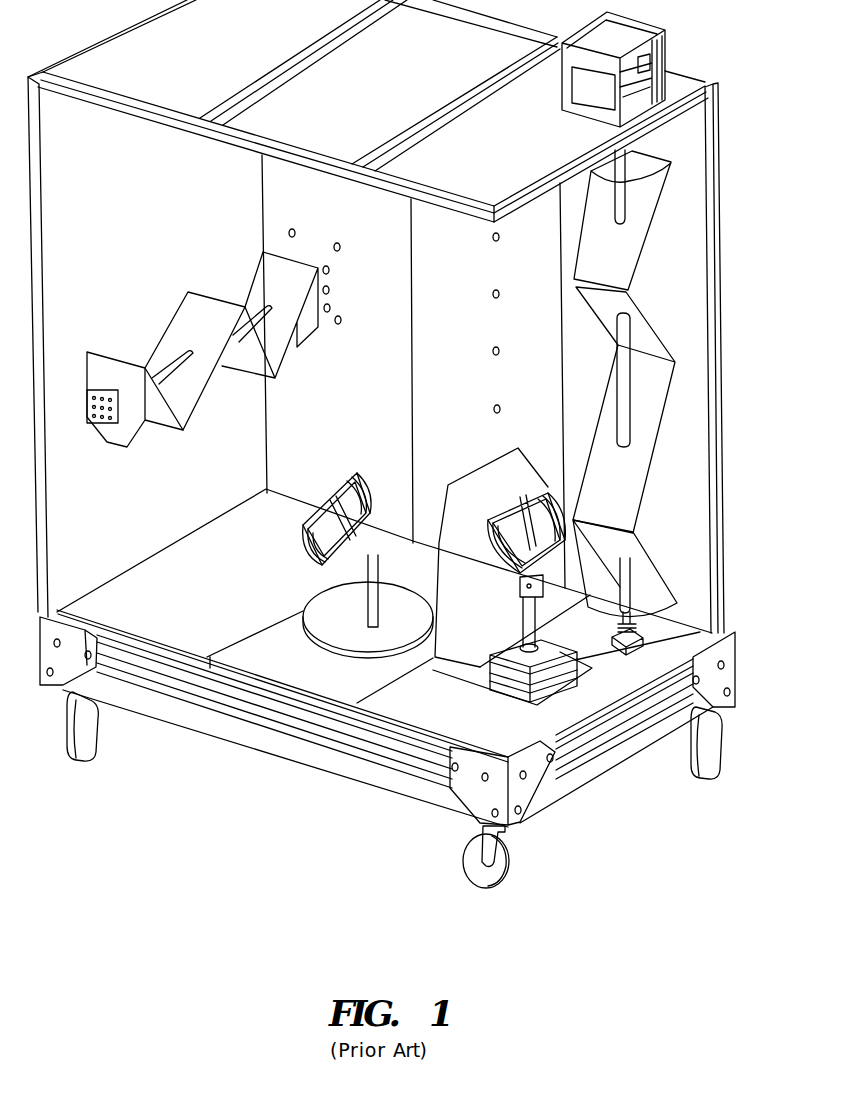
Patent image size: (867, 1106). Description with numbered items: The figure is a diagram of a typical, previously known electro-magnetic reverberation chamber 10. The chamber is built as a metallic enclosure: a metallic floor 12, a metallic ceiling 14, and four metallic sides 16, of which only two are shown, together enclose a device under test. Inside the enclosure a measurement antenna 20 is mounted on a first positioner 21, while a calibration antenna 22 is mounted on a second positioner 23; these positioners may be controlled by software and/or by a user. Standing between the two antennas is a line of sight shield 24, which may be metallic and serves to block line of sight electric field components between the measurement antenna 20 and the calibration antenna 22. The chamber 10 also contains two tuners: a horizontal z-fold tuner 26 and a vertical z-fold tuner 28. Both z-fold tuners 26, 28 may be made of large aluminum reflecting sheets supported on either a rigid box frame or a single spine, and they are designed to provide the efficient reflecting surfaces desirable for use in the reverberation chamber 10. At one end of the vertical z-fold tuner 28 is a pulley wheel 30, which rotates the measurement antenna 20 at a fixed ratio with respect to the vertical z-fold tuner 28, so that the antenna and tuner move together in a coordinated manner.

The electro-magnetic reverberation chamber 10 is at (207, 788).
The metallic floor 12 is at (228, 603).
The metallic ceiling 14 is at (336, 184).
The metallic sides 16 is at (382, 401).
The measurement antenna 20 is at (546, 490).
The first positioner 21 is at (486, 667).
The calibration antenna 22 is at (370, 480).
The second positioner 23 is at (326, 613).
The line of sight shield 24 is at (487, 457).
The horizontal z-fold tuner 26 is at (310, 352).
The vertical z-fold tuner 28 is at (655, 303).
The pulley wheel 30 is at (653, 633).